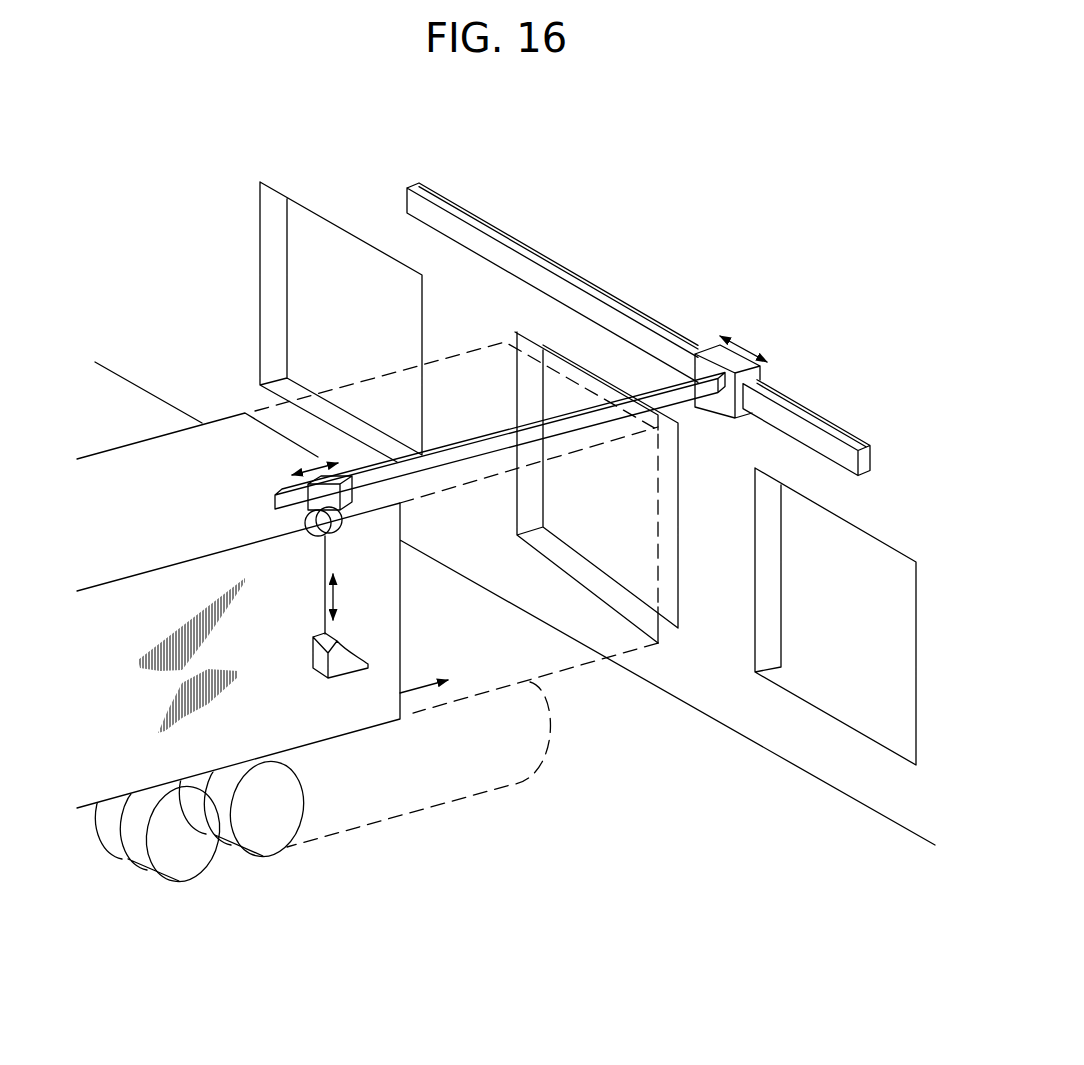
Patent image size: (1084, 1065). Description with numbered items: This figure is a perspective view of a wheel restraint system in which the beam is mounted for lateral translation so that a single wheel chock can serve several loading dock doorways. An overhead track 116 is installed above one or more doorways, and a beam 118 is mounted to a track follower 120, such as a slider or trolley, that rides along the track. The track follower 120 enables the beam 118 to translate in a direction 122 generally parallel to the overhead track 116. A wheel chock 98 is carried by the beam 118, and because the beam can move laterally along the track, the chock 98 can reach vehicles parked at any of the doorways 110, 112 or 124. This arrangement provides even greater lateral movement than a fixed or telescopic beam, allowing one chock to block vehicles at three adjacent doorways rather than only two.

The wheel chock 98 is at (320, 657).
The doorway 110 is at (622, 480).
The doorway 112 is at (818, 596).
The overhead track 116 is at (483, 245).
The beam 118 is at (450, 447).
The track follower 120 is at (720, 413).
The direction 122 is at (744, 341).
The doorway 124 is at (351, 295).